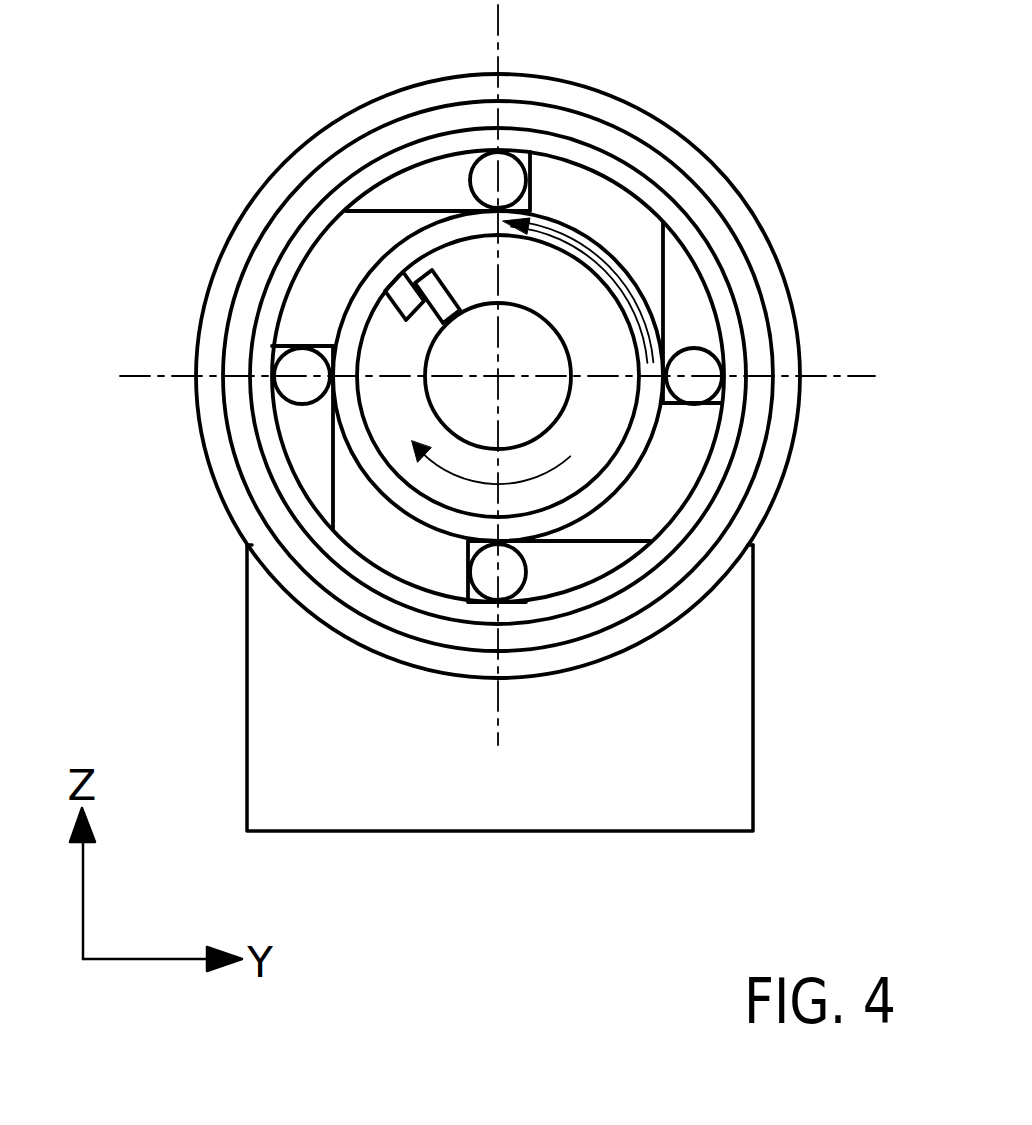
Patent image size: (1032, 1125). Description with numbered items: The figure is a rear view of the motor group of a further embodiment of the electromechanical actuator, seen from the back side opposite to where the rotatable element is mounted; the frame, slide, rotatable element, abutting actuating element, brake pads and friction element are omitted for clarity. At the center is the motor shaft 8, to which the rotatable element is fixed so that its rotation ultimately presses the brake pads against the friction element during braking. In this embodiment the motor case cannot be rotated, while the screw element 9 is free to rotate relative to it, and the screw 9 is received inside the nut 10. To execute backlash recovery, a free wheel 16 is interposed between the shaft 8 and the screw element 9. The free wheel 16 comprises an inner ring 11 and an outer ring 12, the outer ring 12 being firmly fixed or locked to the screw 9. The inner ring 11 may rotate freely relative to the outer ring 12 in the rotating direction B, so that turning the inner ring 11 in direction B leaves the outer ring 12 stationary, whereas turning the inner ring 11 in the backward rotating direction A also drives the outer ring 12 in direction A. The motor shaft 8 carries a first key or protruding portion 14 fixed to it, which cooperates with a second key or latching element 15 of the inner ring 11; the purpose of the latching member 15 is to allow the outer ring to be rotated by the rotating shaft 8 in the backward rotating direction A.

The motor shaft 8 is at (428, 400).
The screw element 9 is at (737, 242).
The nut 10 is at (723, 180).
The inner ring 11 is at (610, 480).
The outer ring 12 is at (727, 472).
The first key or protruding portion 14 is at (415, 278).
The second key or latching element 15 is at (402, 302).
The free wheel 16 is at (393, 195).
The backward rotating direction A is at (603, 250).
The rotating direction B is at (452, 478).